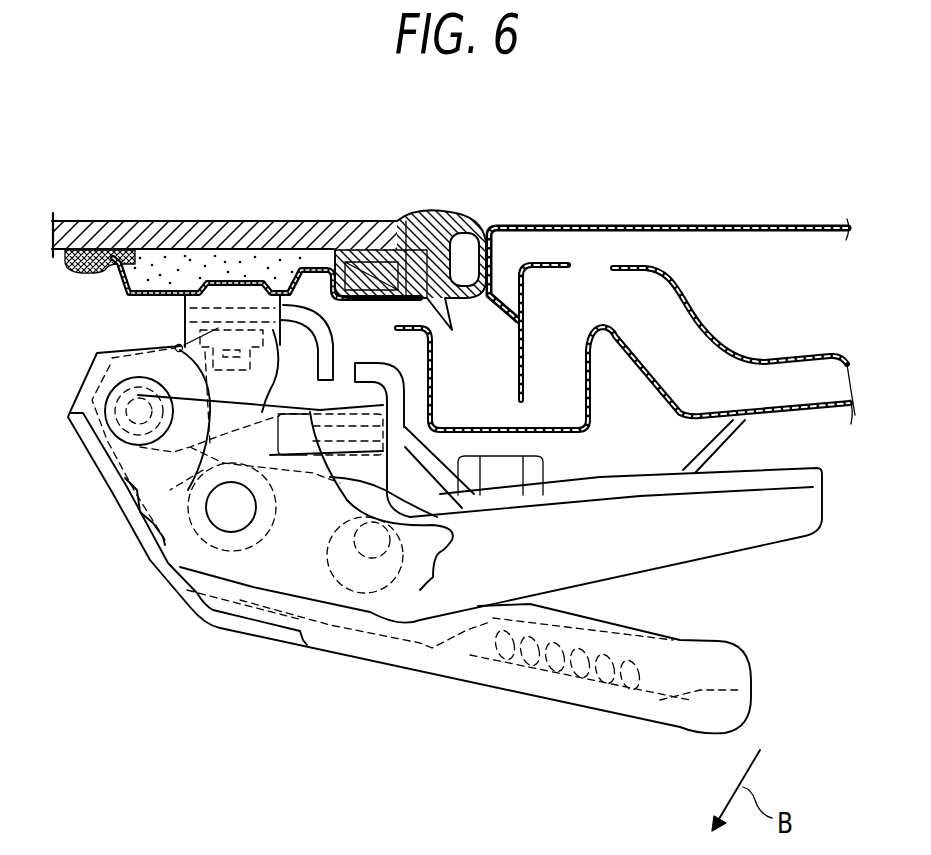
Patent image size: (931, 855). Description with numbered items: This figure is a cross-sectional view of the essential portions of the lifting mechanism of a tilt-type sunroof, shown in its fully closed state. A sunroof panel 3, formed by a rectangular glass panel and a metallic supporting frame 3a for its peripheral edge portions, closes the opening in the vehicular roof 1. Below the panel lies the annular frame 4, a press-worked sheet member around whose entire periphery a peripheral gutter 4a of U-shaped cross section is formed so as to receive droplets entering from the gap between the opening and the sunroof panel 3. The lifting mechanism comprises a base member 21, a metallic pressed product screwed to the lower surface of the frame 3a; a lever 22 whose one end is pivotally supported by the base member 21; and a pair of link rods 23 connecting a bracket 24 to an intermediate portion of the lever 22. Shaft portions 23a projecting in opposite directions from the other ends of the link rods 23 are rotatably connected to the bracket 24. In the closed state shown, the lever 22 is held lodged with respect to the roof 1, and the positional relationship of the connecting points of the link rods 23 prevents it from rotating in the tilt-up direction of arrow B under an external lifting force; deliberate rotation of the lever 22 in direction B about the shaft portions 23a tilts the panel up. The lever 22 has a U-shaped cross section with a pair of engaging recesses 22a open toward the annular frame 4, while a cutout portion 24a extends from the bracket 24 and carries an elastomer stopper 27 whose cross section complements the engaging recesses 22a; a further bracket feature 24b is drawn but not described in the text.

The vehicular roof 1 is at (754, 225).
The sunroof panel 3 is at (165, 221).
The supporting frame 3a is at (122, 300).
The annular frame 4 is at (600, 326).
The peripheral gutter 4a is at (556, 322).
The base member 21 is at (305, 345).
The lever 22 is at (398, 658).
The engaging recesses 22a is at (472, 538).
The link rods 23 is at (278, 628).
The shaft portions 23a is at (222, 500).
The bracket 24 is at (777, 535).
The cutout portion 24a is at (223, 532).
The latch arm 24b is at (432, 462).
The stopper 27 is at (340, 396).